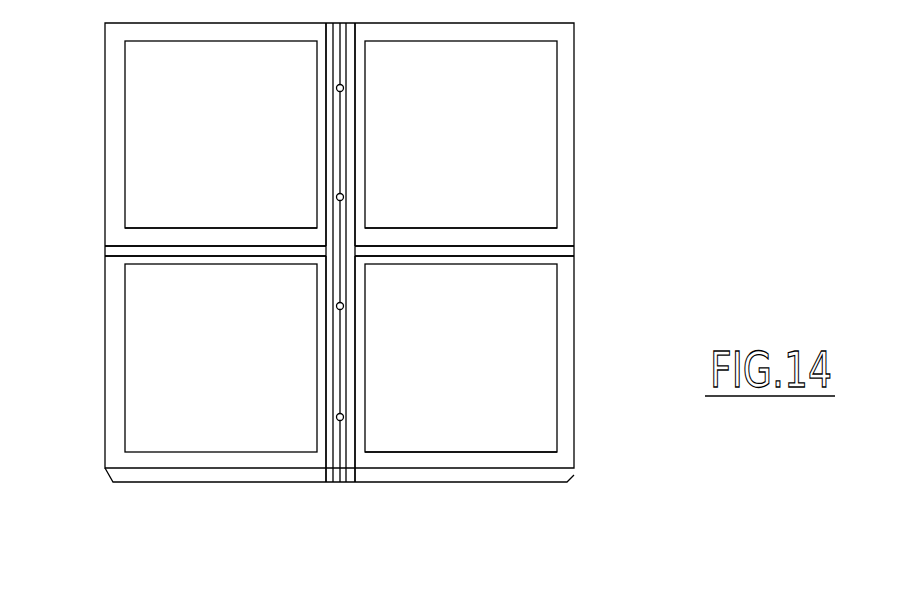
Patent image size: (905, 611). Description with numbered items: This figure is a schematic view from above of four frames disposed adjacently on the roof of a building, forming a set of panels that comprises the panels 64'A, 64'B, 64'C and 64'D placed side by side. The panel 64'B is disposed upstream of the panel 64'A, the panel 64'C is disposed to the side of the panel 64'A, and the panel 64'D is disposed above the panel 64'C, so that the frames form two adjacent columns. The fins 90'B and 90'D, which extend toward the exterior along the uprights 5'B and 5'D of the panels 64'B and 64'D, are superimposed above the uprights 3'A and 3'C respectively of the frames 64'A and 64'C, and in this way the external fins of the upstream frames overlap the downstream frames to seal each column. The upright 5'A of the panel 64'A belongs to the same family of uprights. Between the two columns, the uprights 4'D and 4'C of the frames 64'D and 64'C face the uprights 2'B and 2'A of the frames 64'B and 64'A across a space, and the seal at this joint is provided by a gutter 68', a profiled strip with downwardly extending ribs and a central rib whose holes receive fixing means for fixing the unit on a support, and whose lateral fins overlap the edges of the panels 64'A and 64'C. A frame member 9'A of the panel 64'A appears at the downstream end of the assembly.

The panel 64'D is at (221, 134).
The panel 64'B is at (461, 134).
The panel 64'C is at (221, 358).
The panel 64'A is at (461, 358).
The upright 5'D is at (221, 210).
The upright 5'B is at (461, 208).
The upright 5'A is at (461, 437).
The upright 4'D is at (297, 134).
The upright 4'C is at (291, 369).
The upright 2'B is at (384, 134).
The upright 2'A is at (383, 369).
The upright 3'C is at (215, 287).
The upright 3'A is at (464, 279).
The fin 90'D is at (182, 258).
The fin 90'B is at (503, 273).
The gutter 68' is at (375, 253).
The frame member 9'A is at (339, 494).